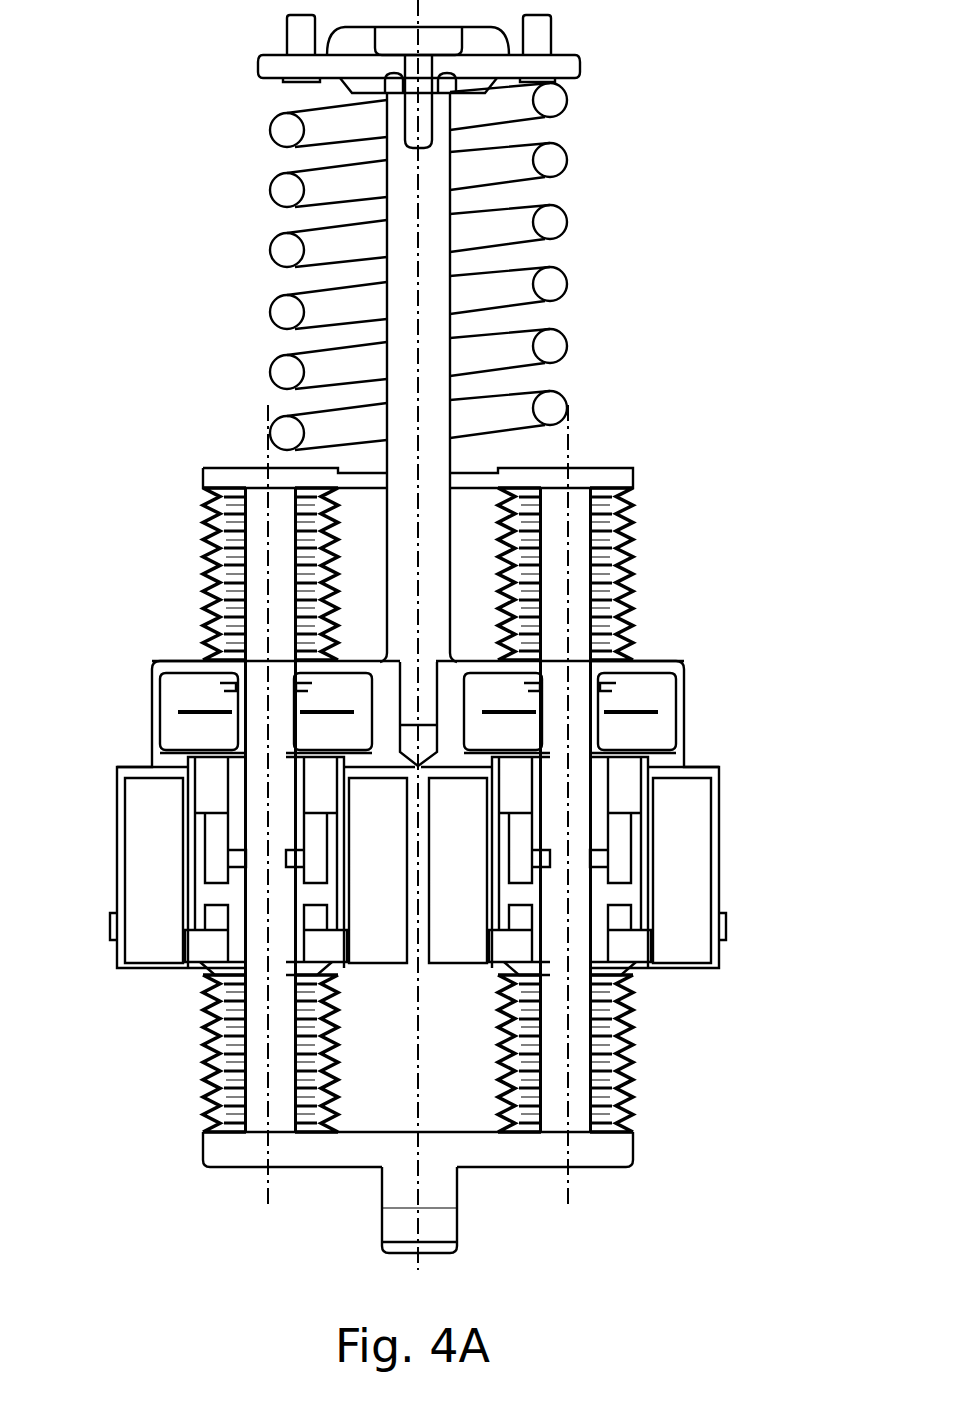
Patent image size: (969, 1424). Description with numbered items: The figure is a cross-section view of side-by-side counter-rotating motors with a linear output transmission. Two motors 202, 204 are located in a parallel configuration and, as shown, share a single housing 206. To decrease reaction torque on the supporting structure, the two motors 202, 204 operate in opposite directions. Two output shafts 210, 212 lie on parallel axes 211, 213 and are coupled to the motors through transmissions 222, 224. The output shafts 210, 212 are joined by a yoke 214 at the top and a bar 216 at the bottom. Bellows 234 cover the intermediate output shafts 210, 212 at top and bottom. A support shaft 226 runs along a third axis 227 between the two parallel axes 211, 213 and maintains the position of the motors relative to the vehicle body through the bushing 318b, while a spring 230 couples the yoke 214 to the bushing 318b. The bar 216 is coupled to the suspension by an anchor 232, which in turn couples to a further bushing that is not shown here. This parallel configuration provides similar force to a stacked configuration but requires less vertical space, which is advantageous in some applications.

The bushing 318b is at (578, 62).
The spring 230 is at (553, 216).
The support shaft 226 is at (422, 328).
The third axis 227 is at (416, 568).
The parallel axis 211 is at (268, 460).
The parallel axis 213 is at (568, 455).
The yoke 214 is at (480, 472).
The bellows 234 is at (207, 530).
The housing 206 is at (158, 765).
The transmission 222 is at (234, 778).
The transmission 224 is at (600, 797).
The motor 202 is at (105, 770).
The motor 204 is at (731, 770).
The output shaft 210 is at (262, 938).
The output shaft 212 is at (584, 968).
The bar 216 is at (380, 1150).
The anchor 232 is at (458, 1228).